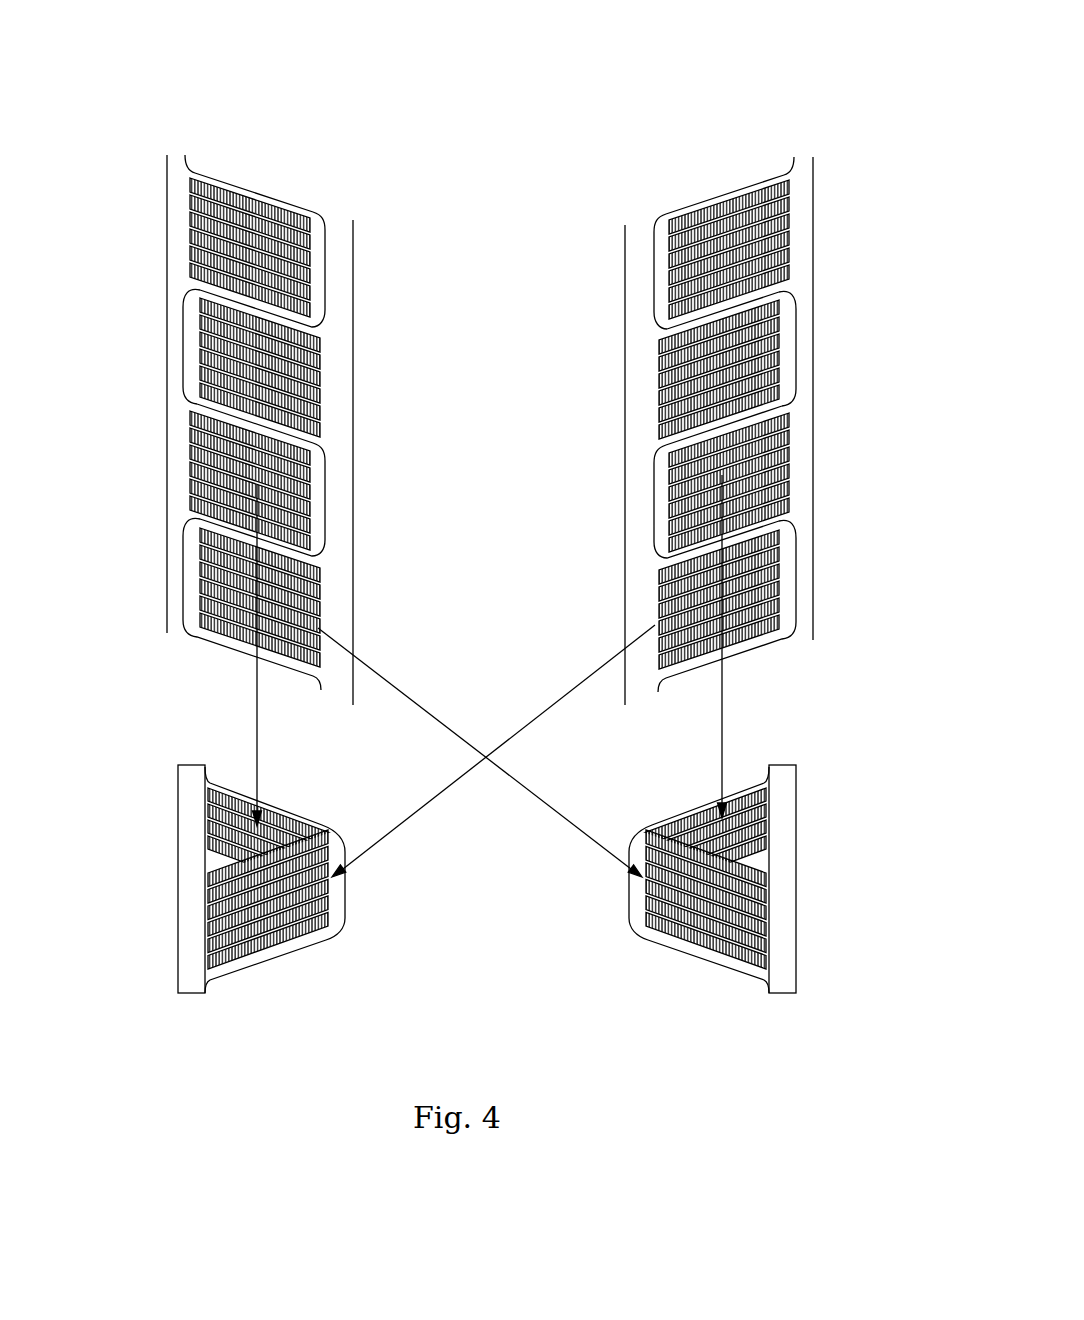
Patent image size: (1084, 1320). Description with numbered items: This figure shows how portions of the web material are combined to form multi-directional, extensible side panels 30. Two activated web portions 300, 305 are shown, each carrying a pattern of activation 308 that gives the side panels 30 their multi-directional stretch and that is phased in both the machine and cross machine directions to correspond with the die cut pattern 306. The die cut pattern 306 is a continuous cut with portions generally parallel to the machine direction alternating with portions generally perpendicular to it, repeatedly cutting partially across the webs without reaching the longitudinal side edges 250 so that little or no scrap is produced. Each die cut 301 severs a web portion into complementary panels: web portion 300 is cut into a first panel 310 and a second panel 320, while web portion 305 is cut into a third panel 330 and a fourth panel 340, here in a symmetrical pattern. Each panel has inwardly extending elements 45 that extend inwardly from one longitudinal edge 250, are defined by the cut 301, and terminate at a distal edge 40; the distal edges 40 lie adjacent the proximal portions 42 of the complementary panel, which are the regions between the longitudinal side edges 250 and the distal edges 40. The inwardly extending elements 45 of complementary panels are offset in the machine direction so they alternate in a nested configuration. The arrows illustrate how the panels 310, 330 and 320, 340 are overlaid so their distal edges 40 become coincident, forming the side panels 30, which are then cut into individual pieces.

The web portion 305 is at (236, 165).
The web portion 300 is at (708, 174).
The third panel 330 is at (258, 240).
The fourth panel 340 is at (330, 412).
The pattern of activation 308 is at (787, 252).
The second panel 320 is at (700, 470).
The inwardly extending elements 45 is at (303, 262).
The distal edge 40 is at (183, 318).
The first panel 310 is at (637, 262).
The die cut 301 is at (183, 343).
The die cut pattern 306 is at (183, 397).
The proximal portions 42 is at (345, 455).
The longitudinal side edges 250 is at (163, 520).
The side panels 30 is at (366, 895).